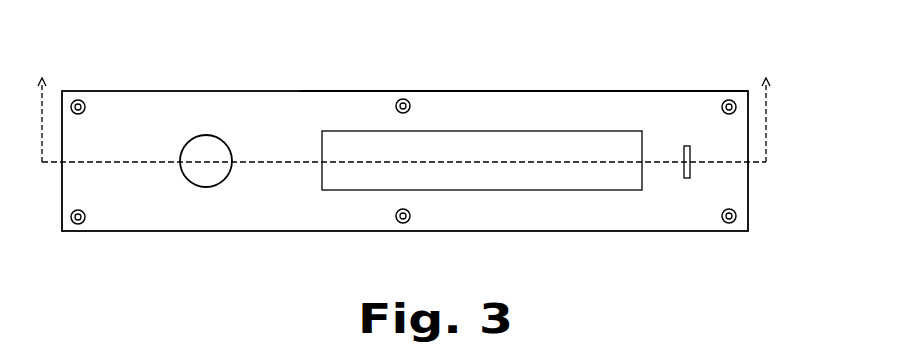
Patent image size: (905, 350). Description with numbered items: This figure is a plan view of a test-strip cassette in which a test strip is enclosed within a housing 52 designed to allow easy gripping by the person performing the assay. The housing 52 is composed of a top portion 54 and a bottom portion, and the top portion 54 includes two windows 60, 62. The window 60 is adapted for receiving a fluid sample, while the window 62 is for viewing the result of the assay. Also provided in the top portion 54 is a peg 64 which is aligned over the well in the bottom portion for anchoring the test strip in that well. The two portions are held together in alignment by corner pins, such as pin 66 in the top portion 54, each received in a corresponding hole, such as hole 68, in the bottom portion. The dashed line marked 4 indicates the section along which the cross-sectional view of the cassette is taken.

The section line 4- 4 is at (403, 107).
The housing 52 is at (124, 90).
The top portion 54 is at (603, 102).
The window 60 is at (204, 149).
The window 62 is at (589, 185).
The peg 64 is at (690, 152).
The pin 66 is at (409, 100).
The hole 68 is at (395, 104).